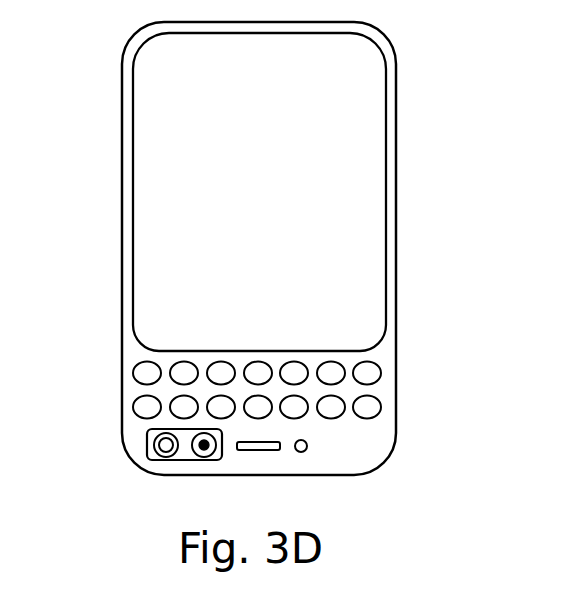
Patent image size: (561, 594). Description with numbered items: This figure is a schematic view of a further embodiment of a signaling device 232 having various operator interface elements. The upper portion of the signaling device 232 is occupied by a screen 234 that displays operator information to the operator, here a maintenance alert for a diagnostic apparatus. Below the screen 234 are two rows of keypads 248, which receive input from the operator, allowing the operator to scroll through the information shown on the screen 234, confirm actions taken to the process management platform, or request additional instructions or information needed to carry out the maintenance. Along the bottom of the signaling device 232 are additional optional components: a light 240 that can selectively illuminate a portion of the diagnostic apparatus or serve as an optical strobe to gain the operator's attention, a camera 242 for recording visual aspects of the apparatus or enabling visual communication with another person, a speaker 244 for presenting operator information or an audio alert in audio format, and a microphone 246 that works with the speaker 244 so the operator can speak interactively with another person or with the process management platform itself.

The signaling device 232 is at (396, 76).
The screen 234 is at (386, 163).
The light 240 is at (157, 452).
The camera 242 is at (197, 453).
The speaker 244 is at (262, 451).
The microphone 246 is at (307, 448).
The keypads 248 is at (381, 372).